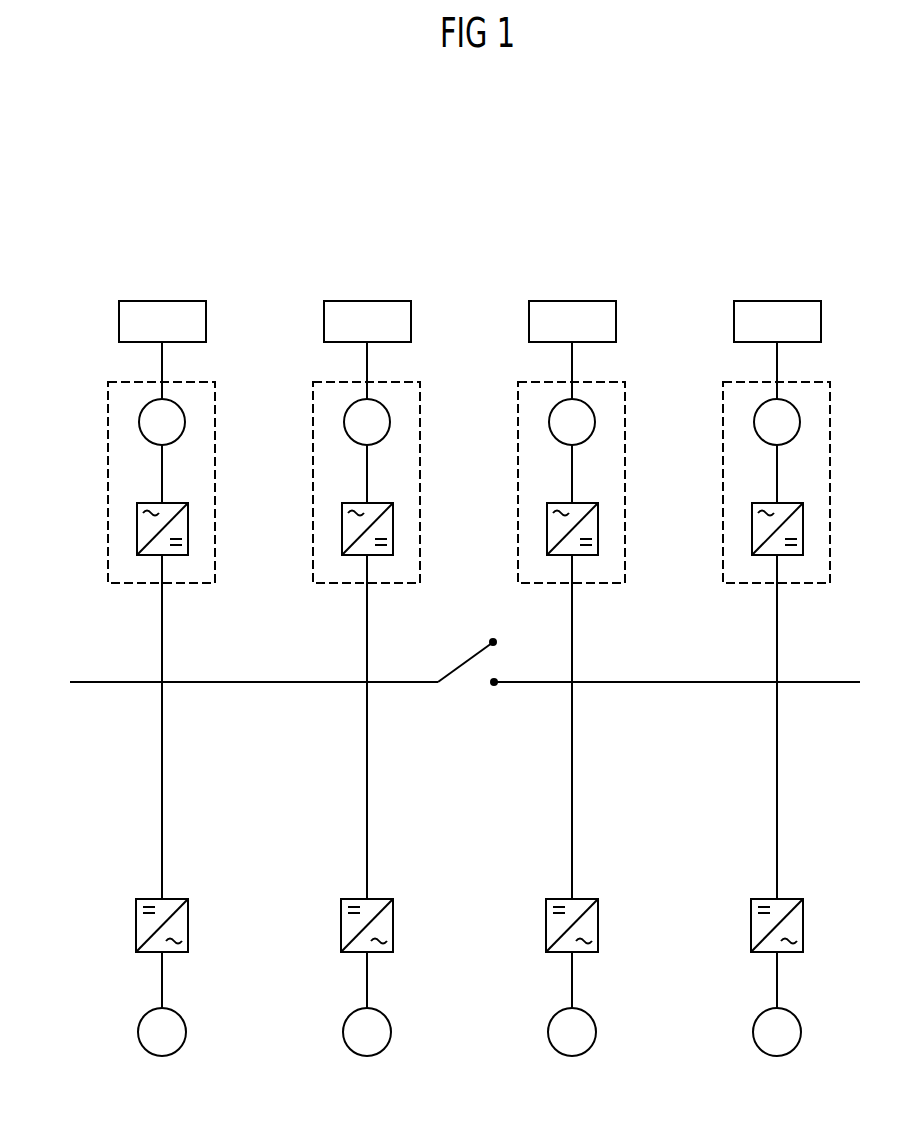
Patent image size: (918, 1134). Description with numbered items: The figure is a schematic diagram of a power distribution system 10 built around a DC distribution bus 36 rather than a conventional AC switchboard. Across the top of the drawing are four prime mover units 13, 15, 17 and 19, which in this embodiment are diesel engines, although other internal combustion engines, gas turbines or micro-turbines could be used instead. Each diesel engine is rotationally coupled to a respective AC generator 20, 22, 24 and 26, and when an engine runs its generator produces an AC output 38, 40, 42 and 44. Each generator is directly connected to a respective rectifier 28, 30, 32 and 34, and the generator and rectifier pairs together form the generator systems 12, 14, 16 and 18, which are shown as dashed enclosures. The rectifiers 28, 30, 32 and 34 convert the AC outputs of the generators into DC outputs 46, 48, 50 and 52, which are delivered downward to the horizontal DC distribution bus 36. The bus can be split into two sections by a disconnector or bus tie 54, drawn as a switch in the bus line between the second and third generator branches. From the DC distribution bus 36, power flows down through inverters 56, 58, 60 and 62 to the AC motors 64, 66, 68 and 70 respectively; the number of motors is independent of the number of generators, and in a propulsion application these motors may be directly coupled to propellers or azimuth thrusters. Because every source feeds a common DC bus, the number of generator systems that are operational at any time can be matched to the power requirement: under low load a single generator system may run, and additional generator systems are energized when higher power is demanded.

The power distribution system 10 is at (182, 157).
The generator system 12 is at (212, 382).
The prime mover unit 13 is at (183, 301).
The generator system 14 is at (417, 382).
The prime mover unit 15 is at (388, 301).
The generator system 16 is at (622, 382).
The prime mover unit 17 is at (593, 301).
The generator system 18 is at (827, 382).
The prime mover unit 19 is at (798, 301).
The AC generator 20 is at (139, 424).
The AC generator 22 is at (344, 424).
The AC generator 24 is at (549, 424).
The AC generator 26 is at (754, 424).
The rectifier 28 is at (137, 529).
The rectifier 30 is at (342, 529).
The rectifier 32 is at (547, 529).
The rectifier 34 is at (752, 529).
The DC distribution bus 36 is at (398, 685).
The AC output 38 is at (162, 479).
The AC output 40 is at (367, 479).
The AC output 42 is at (572, 479).
The AC output 44 is at (777, 479).
The DC output 46 is at (162, 607).
The DC output 48 is at (367, 607).
The DC output 50 is at (572, 607).
The DC output 52 is at (777, 607).
The bus tie 54 is at (472, 690).
The inverter 56 is at (136, 930).
The inverter 58 is at (341, 930).
The inverter 60 is at (546, 930).
The inverter 62 is at (751, 930).
The AC motor 64 is at (138, 1033).
The AC motor 66 is at (343, 1033).
The AC motor 68 is at (548, 1033).
The AC motor 70 is at (753, 1033).